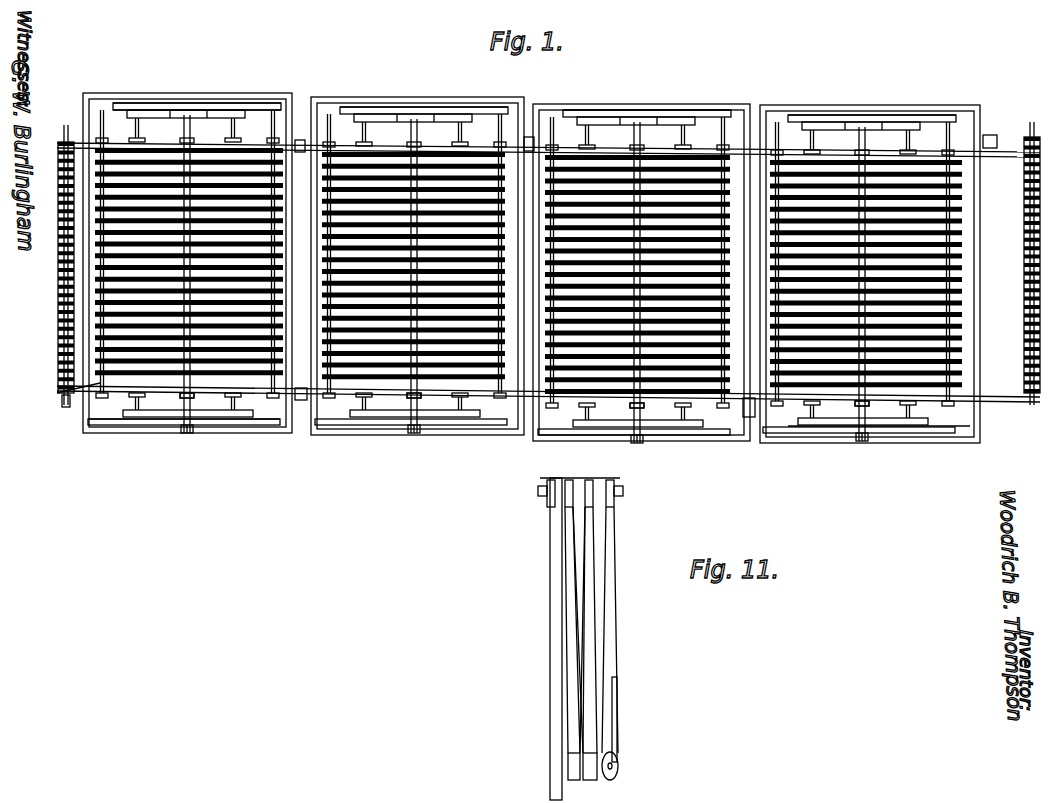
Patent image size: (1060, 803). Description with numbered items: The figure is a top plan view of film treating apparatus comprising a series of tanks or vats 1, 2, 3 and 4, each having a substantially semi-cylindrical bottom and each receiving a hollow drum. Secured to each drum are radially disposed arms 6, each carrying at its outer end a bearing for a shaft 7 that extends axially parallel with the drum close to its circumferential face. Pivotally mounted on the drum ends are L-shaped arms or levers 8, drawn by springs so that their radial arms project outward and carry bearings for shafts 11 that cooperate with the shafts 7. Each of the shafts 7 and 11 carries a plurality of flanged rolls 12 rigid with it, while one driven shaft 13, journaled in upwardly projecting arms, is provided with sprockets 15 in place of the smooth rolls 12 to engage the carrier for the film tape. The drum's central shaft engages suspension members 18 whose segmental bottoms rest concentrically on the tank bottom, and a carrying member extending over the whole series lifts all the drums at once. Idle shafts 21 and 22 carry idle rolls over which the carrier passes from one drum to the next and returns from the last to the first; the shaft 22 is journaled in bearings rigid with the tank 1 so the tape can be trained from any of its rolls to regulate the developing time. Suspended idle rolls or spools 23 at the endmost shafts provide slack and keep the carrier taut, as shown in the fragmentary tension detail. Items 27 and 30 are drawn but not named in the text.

In FIG. 1, the tank or vat 1 is at (976, 332).
In FIG. 1, the tank or vat 2 is at (702, 440).
In FIG. 1, the tank or vat 3 is at (490, 435).
In FIG. 1, the tank or vat 4 is at (83, 433).
In FIG. 1, the radially disposed arm 6 is at (218, 112).
In FIG. 1, the shaft 7 is at (133, 129).
In FIG. 1, the L-shaped arm or lever 8 is at (113, 105).
In FIG. 1, the shaft 11 is at (108, 105).
In FIG. 1, the flanged roll 12 is at (100, 383).
In FIG. 1, the driven shaft 13 is at (184, 130).
In FIG. 1, the sprocket 15 is at (190, 397).
In FIG. 1, the suspension member 18 is at (260, 98).
In FIG. 1, the idle shaft 21 is at (58, 345).
In FIG. 1, the idle shaft 22 is at (1024, 354).
In FIG. 11, the idle shaft 22 is at (620, 489).
In FIG. 11, the suspended idle roll or spool 23 is at (618, 772).
In FIG. 1, the pinion 27 is at (184, 430).
In FIG. 1, the connecting bar 30 is at (80, 142).
In FIG. 11, the connecting bar 30 is at (614, 688).